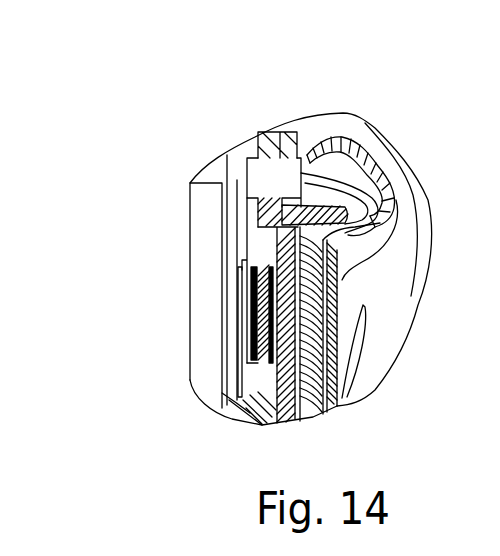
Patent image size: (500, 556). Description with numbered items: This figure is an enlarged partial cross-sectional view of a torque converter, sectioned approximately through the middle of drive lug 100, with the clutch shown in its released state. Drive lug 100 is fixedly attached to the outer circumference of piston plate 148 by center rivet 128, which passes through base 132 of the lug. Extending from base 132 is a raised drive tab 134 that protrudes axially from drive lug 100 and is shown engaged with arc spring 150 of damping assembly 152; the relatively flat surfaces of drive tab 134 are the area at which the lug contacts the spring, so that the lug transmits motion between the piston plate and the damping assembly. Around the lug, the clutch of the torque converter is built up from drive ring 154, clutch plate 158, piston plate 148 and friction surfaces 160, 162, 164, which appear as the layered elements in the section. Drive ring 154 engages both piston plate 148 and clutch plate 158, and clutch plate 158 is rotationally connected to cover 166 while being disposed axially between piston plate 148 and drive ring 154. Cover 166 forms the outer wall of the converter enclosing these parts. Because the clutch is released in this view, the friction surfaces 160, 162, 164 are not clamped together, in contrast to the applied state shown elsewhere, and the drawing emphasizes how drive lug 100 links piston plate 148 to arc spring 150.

The drive lug 100 is at (272, 128).
The center rivet 128 is at (256, 175).
The base 132 is at (283, 155).
The drive tab 134 is at (378, 206).
The piston plate 148 is at (260, 207).
The arc spring 150 is at (326, 334).
The damping assembly 152 is at (322, 165).
The drive ring 154 is at (247, 240).
The clutch plate 158 is at (240, 408).
The friction surface 160 is at (238, 262).
The friction surface 162 is at (235, 325).
The friction surface 164 is at (243, 365).
The cover 166 is at (205, 168).